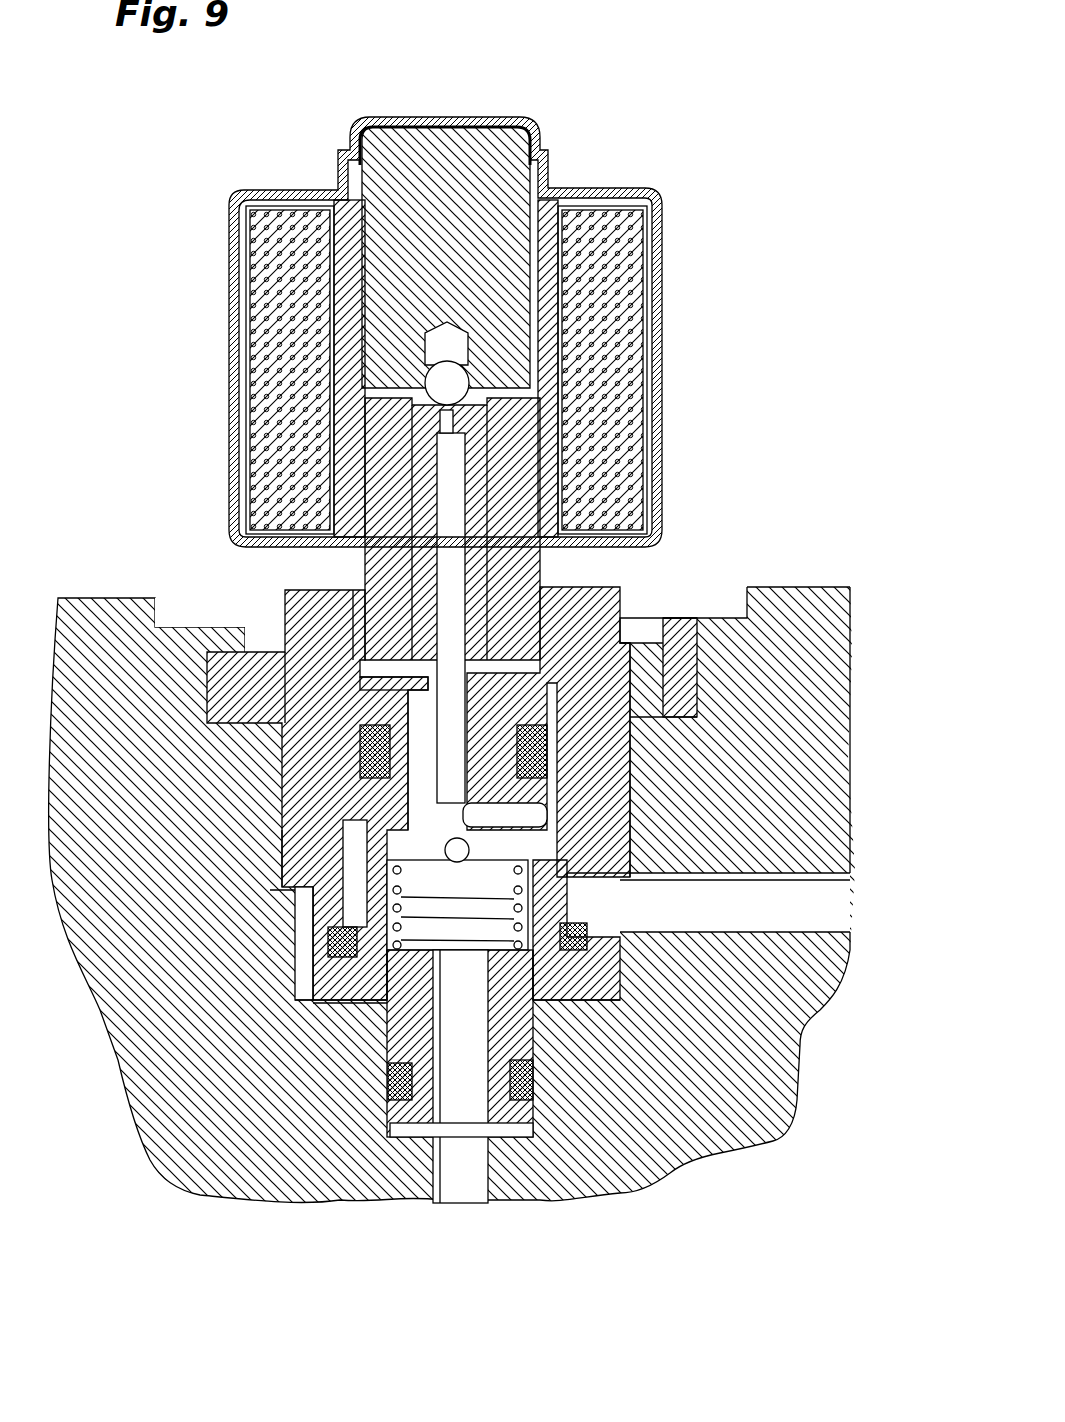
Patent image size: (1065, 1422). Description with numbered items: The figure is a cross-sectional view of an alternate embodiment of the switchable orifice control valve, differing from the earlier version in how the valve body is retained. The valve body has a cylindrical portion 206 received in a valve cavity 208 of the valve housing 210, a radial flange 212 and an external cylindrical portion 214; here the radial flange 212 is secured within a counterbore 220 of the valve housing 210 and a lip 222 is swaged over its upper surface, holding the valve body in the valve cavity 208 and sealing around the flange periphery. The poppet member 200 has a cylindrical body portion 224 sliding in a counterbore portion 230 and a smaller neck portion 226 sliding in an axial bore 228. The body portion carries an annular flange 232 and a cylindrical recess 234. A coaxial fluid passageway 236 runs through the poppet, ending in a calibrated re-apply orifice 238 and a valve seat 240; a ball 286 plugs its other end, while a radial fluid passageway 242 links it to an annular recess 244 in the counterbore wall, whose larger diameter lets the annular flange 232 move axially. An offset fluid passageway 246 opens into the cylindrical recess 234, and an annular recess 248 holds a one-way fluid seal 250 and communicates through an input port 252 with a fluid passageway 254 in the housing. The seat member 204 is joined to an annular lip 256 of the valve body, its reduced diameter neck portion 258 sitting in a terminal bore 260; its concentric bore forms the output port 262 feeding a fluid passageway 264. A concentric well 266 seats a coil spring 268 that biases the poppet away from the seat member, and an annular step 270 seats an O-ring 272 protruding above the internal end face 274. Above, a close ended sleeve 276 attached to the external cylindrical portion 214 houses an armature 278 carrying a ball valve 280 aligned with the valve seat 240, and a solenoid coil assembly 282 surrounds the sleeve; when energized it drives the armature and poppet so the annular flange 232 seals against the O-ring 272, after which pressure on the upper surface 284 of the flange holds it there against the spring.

The poppet member 200 is at (532, 655).
The seat member 204 is at (387, 1055).
The cylindrical portion 206 is at (345, 790).
The valve cavity 208 is at (622, 775).
The valve housing 210 is at (803, 587).
The radial flange 212 is at (702, 673).
The external cylindrical portion 214 is at (648, 515).
The counterbore 220 is at (690, 660).
The lip 222 is at (682, 606).
The cylindrical body portion 224 is at (425, 850).
The neck portion 226 is at (453, 423).
The axial bore 228 is at (460, 463).
The counterbore portion 230 is at (362, 692).
The annular flange 232 is at (300, 925).
The cylindrical recess 234 is at (295, 950).
The coaxial fluid passageway 236 is at (487, 430).
The calibrated re-apply orifice 238 is at (490, 410).
The valve seat 240 is at (412, 405).
The radial fluid passageway 242 is at (575, 810).
The annular recess 244 is at (563, 843).
The offset fluid passageway 246 is at (410, 790).
The annular recess 248 is at (380, 742).
The one-way fluid seal 250 is at (630, 718).
The input port 252 is at (590, 948).
The fluid passageway 254 is at (833, 931).
The annular lip 256 is at (312, 965).
The reduced diameter neck portion 258 is at (395, 1090).
The terminal bore 260 is at (535, 1068).
The output port 262 is at (445, 1110).
The fluid passageway 264 is at (440, 1168).
The concentric well 266 is at (535, 1012).
The coil spring 268 is at (575, 1005).
The annular step 270 is at (385, 1020).
The O-ring 272 is at (605, 990).
The internal end face 274 is at (520, 892).
The close ended sleeve 276 is at (385, 118).
The armature 278 is at (457, 133).
The ball valve 280 is at (460, 378).
The solenoid coil assembly 282 is at (267, 217).
The upper surface 284 is at (288, 892).
The ball 286 is at (300, 868).